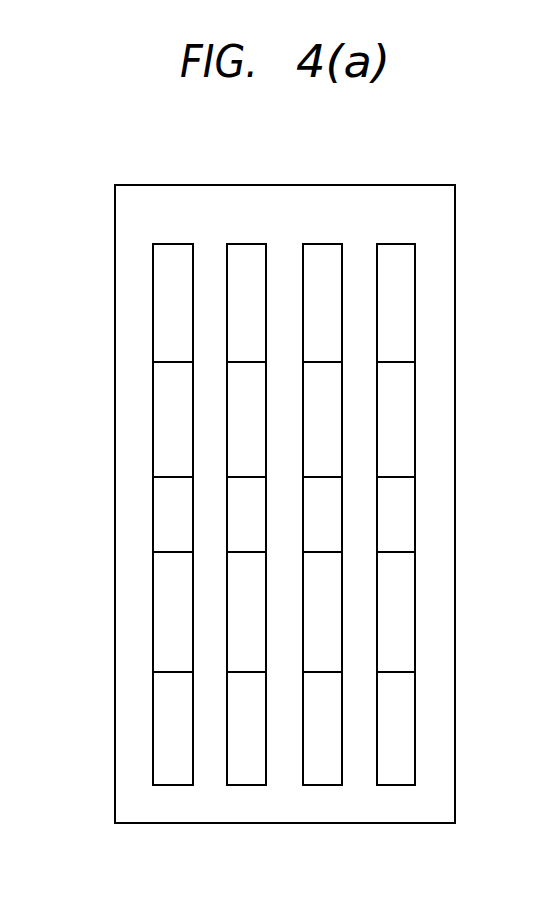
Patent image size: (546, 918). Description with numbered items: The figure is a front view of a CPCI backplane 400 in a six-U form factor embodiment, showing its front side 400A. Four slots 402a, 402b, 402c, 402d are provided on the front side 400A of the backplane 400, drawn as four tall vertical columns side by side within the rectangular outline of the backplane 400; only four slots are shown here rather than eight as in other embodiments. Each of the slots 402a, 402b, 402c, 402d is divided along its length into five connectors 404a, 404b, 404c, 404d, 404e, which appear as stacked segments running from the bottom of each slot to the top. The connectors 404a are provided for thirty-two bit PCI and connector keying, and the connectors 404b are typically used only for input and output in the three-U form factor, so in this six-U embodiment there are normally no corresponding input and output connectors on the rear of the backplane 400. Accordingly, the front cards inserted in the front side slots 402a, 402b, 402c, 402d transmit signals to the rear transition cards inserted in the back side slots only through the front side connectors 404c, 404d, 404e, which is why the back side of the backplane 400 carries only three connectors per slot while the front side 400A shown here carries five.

The backplane 400 is at (195, 185).
The front side 400A is at (299, 185).
The slot 402a is at (178, 243).
The slot 402b is at (247, 243).
The slot 402c is at (323, 243).
The slot 402d is at (396, 243).
The connector 404a is at (155, 755).
The connector 404b is at (155, 637).
The connector 404c is at (237, 534).
The connector 404d is at (158, 445).
The connector 404e is at (158, 330).